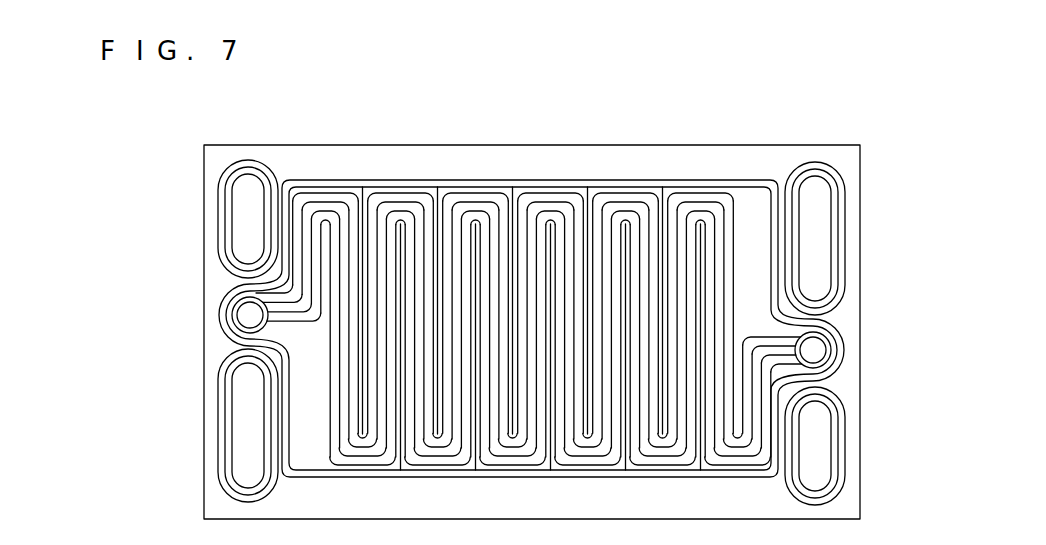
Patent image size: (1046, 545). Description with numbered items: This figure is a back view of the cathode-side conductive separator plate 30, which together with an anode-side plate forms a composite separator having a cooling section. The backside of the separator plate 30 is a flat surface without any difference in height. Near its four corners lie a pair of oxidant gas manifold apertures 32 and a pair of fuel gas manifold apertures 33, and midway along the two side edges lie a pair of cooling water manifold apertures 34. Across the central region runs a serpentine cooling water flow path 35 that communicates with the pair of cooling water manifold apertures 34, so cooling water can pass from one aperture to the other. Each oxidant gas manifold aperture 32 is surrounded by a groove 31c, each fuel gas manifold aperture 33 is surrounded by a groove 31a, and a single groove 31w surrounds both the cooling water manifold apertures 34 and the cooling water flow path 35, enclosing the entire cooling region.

The cathode-side conductive separator plate 30 is at (488, 141).
The groove surrounding the fuel gas manifold apertures 31a is at (259, 160).
The groove surrounding the oxidant gas manifold apertures 31c is at (836, 241).
The groove surrounding the cooling water manifold apertures and cooling water flow p 31w is at (700, 192).
The oxidant gas manifold apertures 32 is at (815, 203).
The fuel gas manifold apertures 33 is at (248, 205).
The cooling water manifold apertures 34 is at (238, 310).
The cooling water flow path 35 is at (331, 198).